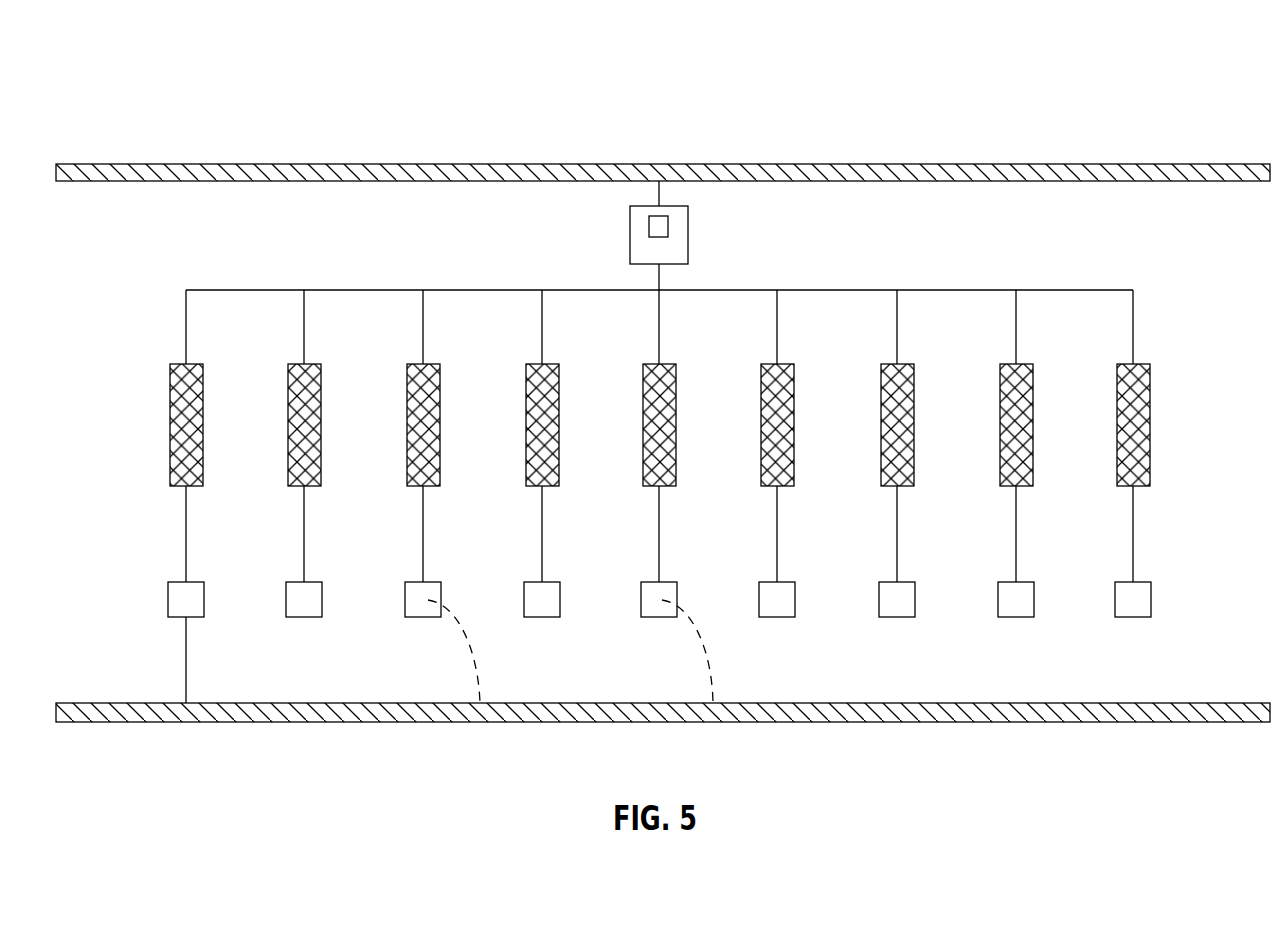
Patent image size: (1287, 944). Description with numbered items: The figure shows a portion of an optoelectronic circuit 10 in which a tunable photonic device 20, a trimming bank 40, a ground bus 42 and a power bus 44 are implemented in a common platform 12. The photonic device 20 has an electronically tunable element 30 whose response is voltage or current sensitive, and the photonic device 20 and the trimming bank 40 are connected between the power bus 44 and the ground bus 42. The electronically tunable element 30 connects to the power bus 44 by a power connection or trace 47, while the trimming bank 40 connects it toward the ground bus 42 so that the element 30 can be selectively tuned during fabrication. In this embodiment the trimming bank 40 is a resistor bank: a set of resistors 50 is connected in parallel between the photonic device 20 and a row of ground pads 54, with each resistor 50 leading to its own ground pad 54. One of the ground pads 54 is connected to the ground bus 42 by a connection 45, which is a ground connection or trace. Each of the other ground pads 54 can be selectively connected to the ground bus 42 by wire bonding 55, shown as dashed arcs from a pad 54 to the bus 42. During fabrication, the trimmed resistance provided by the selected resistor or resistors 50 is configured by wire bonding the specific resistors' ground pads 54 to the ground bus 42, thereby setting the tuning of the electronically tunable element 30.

The optoelectronic circuit 10 is at (96, 83).
The common platform 12 is at (676, 142).
The tunable photonic device 20 is at (606, 238).
The electronically tunable element 30 is at (668, 228).
The trimming bank 40 is at (671, 461).
The ground bus 42 is at (1090, 722).
The power bus 44 is at (1033, 164).
The connection 45 is at (186, 652).
The power connection 47 is at (936, 290).
The resistor 50 is at (170, 395).
The ground pad 54 is at (304, 617).
The wire bonding 55 is at (480, 670).